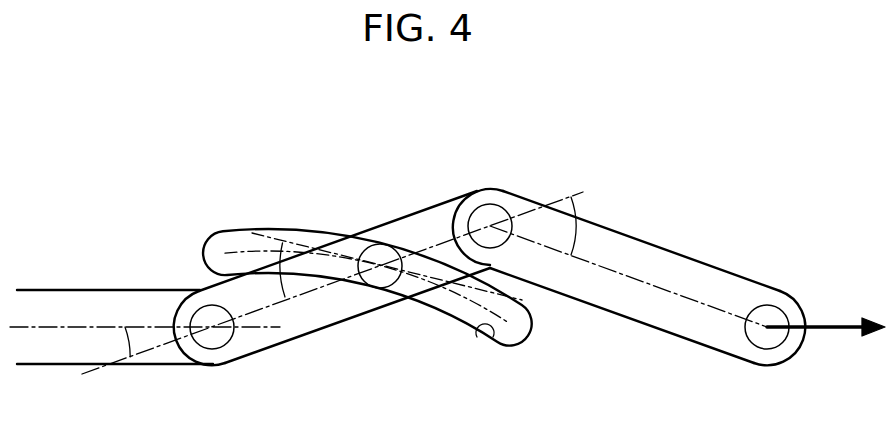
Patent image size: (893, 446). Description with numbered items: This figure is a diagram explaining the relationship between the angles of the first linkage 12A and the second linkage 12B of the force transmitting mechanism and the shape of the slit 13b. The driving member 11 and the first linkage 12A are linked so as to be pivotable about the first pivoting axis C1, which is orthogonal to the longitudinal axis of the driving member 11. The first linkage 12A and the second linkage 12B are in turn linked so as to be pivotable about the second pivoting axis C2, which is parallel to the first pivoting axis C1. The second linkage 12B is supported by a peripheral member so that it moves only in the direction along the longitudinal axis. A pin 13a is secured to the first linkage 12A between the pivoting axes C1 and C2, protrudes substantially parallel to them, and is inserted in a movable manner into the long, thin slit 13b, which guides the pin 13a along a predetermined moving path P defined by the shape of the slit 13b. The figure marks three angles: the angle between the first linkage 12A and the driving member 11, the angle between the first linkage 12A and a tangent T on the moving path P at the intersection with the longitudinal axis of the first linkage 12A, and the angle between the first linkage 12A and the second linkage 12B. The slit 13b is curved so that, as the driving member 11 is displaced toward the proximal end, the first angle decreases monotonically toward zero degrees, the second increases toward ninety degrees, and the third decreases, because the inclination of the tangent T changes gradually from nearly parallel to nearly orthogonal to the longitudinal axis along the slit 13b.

The driving member 11 is at (58, 289).
The first linkage 12A is at (425, 210).
The second linkage 12B is at (670, 251).
The pin 13a is at (397, 281).
The slit 13b is at (487, 322).
The first pivoting axis C1 is at (208, 350).
The second pivoting axis C2 is at (489, 204).
The moving path P is at (233, 251).
The tangent T is at (302, 246).